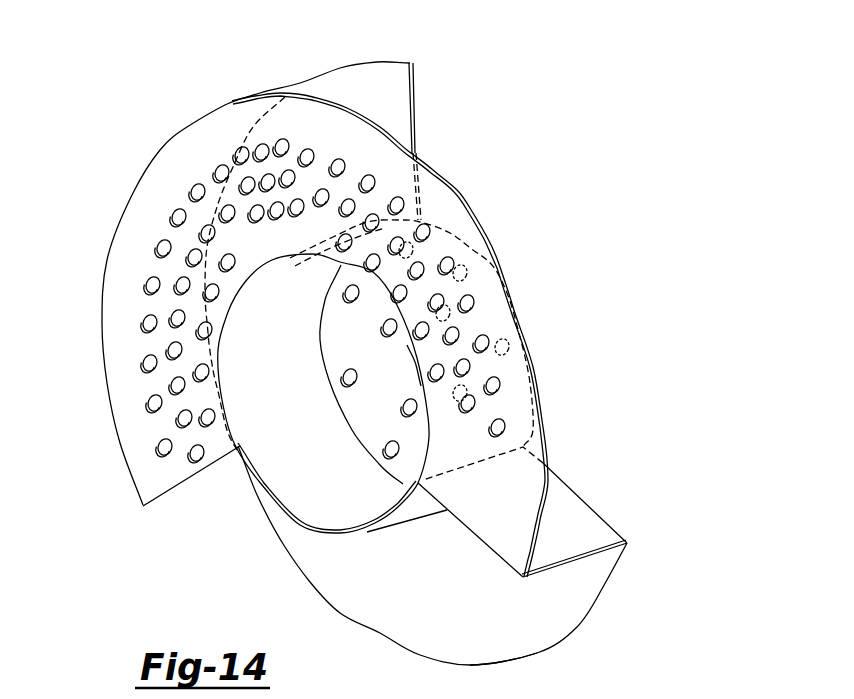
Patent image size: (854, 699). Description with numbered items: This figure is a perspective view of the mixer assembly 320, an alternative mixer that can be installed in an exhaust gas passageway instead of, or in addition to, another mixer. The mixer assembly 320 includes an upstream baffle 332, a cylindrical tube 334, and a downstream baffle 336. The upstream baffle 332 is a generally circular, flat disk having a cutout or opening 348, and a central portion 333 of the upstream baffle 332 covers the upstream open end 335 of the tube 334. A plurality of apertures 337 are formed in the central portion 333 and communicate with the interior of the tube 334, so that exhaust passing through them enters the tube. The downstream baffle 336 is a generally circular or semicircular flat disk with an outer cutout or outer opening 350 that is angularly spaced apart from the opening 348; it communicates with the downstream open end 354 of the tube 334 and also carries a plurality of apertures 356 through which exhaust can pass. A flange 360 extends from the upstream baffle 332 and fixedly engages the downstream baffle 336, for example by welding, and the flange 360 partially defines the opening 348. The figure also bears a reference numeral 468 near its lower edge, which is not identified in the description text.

The mixer assembly 320 is at (500, 82).
The upstream baffle 332 is at (578, 627).
The central portion 333 is at (350, 450).
The cylindrical tube 334 is at (286, 478).
The upstream open end 335 is at (403, 485).
The downstream baffle 336 is at (268, 292).
The apertures 337 is at (388, 328).
The cutout or opening 348 is at (420, 91).
The outer cutout or outer opening 350 is at (590, 502).
The downstream open end 354 is at (366, 535).
The apertures 356 is at (160, 445).
The flange 360 is at (562, 500).
The bracket 468 is at (511, 676).